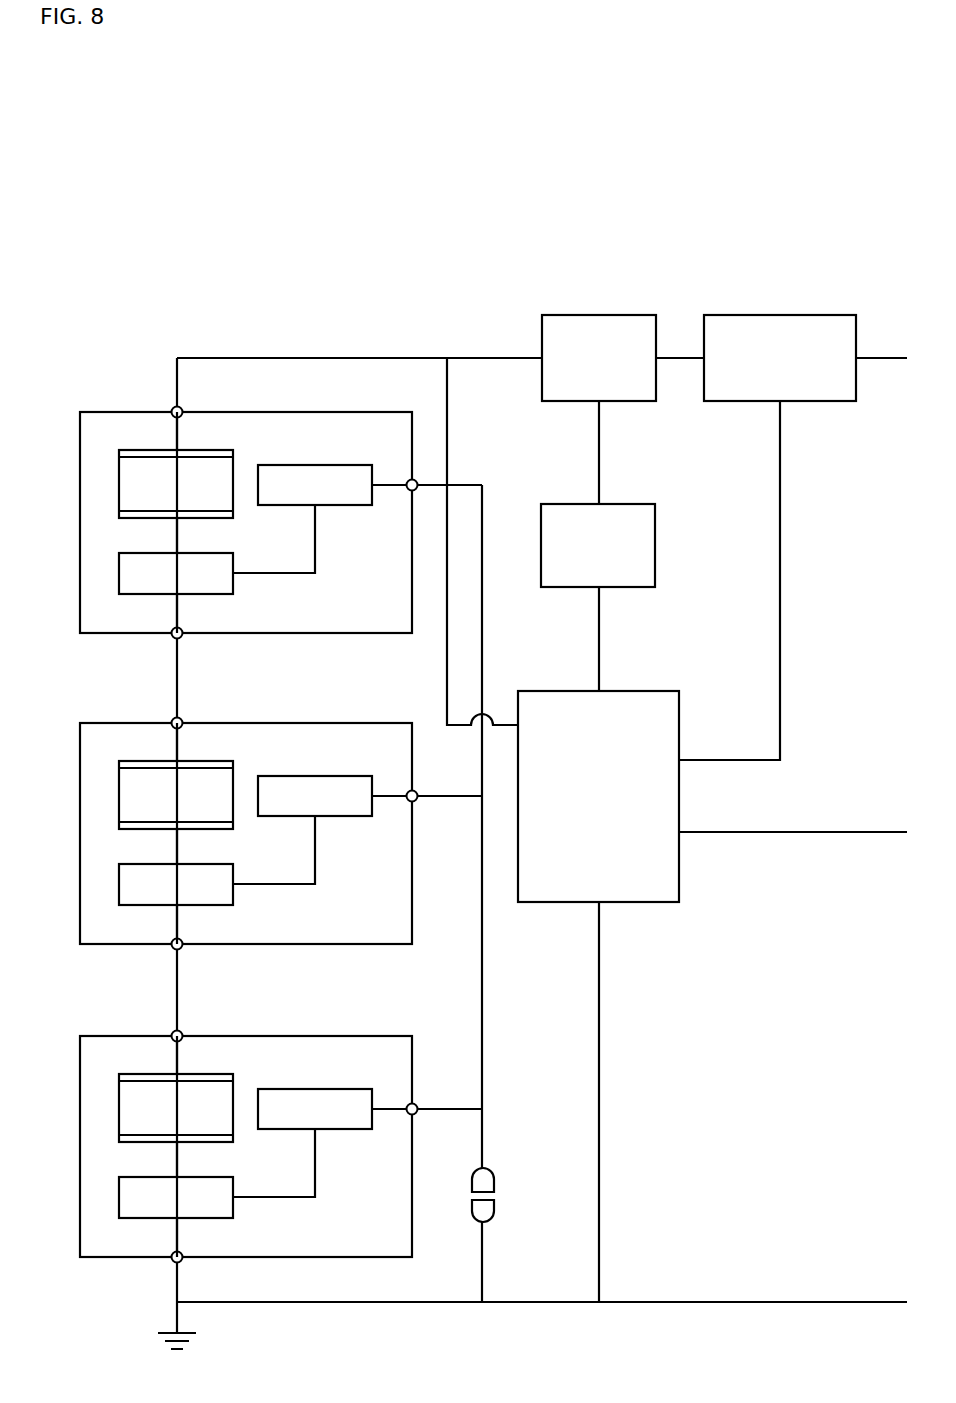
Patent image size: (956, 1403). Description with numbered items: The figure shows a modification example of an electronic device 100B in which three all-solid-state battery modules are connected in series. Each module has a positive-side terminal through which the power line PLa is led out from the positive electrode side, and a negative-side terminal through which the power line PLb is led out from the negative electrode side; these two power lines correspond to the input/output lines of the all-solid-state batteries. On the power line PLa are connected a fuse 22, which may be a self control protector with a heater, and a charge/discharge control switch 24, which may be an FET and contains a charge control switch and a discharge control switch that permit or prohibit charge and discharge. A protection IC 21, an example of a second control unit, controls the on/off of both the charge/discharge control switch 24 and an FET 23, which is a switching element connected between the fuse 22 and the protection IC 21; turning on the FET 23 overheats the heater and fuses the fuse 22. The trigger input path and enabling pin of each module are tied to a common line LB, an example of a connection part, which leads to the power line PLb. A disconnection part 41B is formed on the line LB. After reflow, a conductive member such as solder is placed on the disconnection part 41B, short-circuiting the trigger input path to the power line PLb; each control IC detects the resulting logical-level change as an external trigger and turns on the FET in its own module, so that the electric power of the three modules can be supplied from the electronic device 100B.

The electronic device 100B is at (501, 196).
The protection IC 21 is at (633, 691).
The fuse 22 is at (634, 315).
The FET 23 is at (633, 504).
The charge/discharge control switch 24 is at (780, 315).
The disconnection part 41B is at (504, 1198).
The power line PLa is at (278, 358).
The power line PLb is at (278, 1305).
The line LB is at (485, 1041).